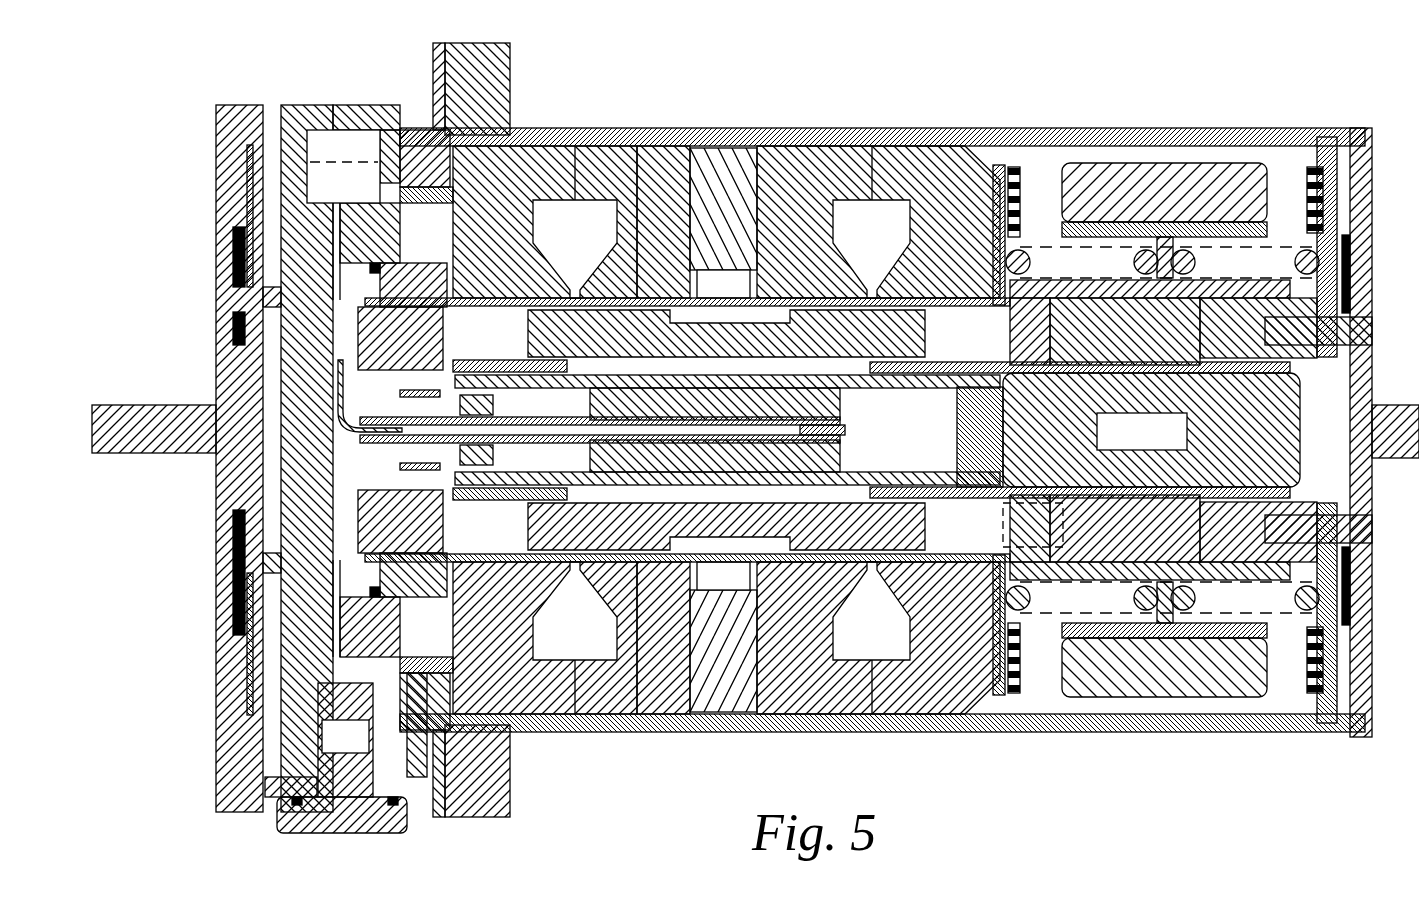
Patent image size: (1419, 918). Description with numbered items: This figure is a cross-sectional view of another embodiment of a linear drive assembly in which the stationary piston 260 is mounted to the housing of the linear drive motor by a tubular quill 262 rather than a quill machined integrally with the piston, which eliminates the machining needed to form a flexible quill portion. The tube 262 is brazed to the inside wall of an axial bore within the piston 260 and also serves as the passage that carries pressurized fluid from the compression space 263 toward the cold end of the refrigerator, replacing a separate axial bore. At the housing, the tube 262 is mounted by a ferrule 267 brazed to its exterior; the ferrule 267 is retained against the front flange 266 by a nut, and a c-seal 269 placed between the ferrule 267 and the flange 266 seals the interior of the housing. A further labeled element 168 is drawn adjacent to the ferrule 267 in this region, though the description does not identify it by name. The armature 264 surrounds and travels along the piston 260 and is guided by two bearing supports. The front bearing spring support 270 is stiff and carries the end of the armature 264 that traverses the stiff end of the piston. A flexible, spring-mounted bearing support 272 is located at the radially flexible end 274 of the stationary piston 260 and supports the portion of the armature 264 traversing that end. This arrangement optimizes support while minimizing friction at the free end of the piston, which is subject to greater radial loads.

The front bearing spring support 270 is at (383, 330).
The c-seal 269 is at (445, 478).
The tubular quill 262 is at (620, 427).
The compression space 263 is at (920, 427).
The armature 264 is at (652, 487).
The stationary piston 260 is at (757, 467).
The flexible end 274 is at (842, 432).
The ferrule 267 is at (490, 420).
The bearing 168 is at (488, 450).
The front flange 266 is at (433, 467).
The flexible bearing support 272 is at (945, 364).